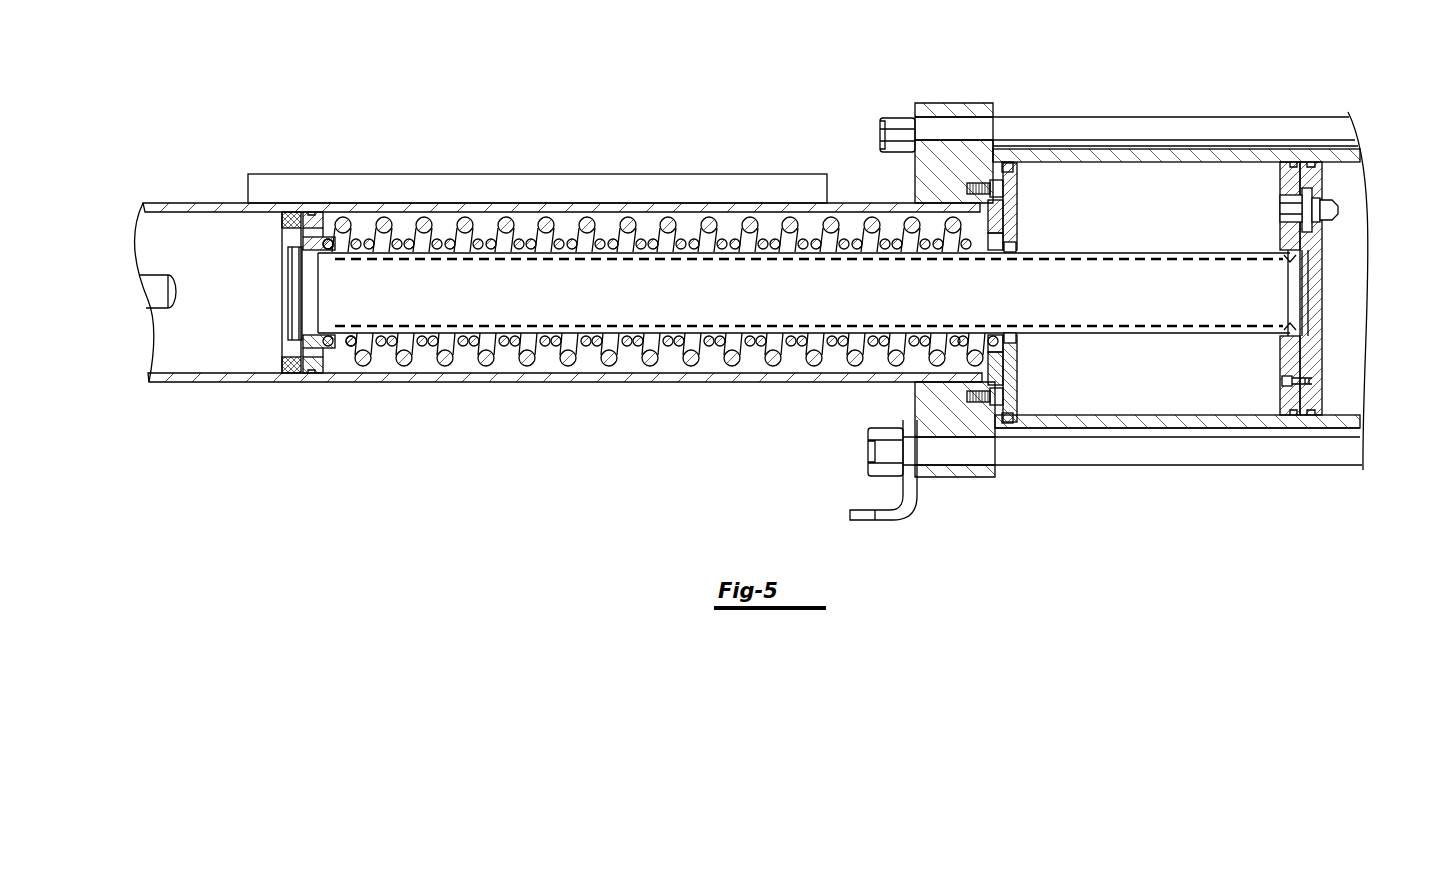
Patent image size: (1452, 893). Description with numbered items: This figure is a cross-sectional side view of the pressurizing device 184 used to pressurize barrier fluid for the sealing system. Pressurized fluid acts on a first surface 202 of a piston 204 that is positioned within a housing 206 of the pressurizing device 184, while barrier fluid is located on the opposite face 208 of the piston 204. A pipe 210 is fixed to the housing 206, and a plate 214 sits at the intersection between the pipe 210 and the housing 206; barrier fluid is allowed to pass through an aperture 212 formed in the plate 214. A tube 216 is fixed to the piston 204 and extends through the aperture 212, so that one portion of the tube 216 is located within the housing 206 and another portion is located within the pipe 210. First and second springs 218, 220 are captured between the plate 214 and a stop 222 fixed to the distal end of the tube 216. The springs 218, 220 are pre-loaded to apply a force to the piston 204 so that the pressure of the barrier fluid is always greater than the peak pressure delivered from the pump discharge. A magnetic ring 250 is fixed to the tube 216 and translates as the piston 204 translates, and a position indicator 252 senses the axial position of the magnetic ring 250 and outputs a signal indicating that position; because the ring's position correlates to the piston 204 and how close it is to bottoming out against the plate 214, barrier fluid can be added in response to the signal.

The pressurizing device 184 is at (752, 112).
The first surface 202 is at (1322, 356).
The piston 204 is at (1288, 173).
The housing 206 is at (1045, 425).
The opposite face 208 is at (1270, 191).
The pipe 210 is at (522, 378).
The aperture 212 is at (1012, 253).
The plate 214 is at (1007, 233).
The tube 216 is at (631, 326).
The first spring 218 is at (401, 356).
The second spring 220 is at (457, 340).
The stop 222 is at (320, 222).
The magnetic ring 250 is at (293, 218).
The position indicator 252 is at (487, 181).